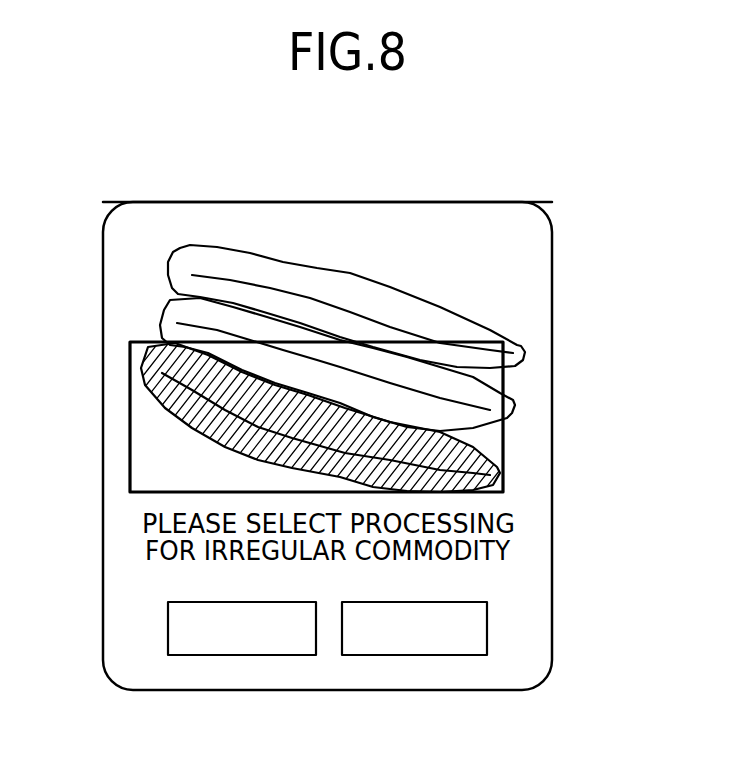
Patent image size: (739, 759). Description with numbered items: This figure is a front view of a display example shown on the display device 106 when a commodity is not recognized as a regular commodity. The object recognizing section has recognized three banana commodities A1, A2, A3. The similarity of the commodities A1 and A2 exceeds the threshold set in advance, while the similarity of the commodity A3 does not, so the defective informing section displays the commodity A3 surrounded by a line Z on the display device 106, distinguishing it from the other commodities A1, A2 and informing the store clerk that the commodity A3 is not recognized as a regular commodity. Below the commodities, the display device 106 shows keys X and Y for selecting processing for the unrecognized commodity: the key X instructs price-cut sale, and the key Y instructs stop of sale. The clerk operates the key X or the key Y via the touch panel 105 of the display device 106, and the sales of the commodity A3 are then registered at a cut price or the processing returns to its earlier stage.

The touch panel 105 is at (535, 613).
The display device 106 is at (483, 202).
The commodity A1 is at (523, 353).
The commodity A2 is at (515, 408).
The commodity A3 is at (493, 447).
The line Z is at (130, 422).
The key X is at (238, 655).
The key Y is at (416, 655).